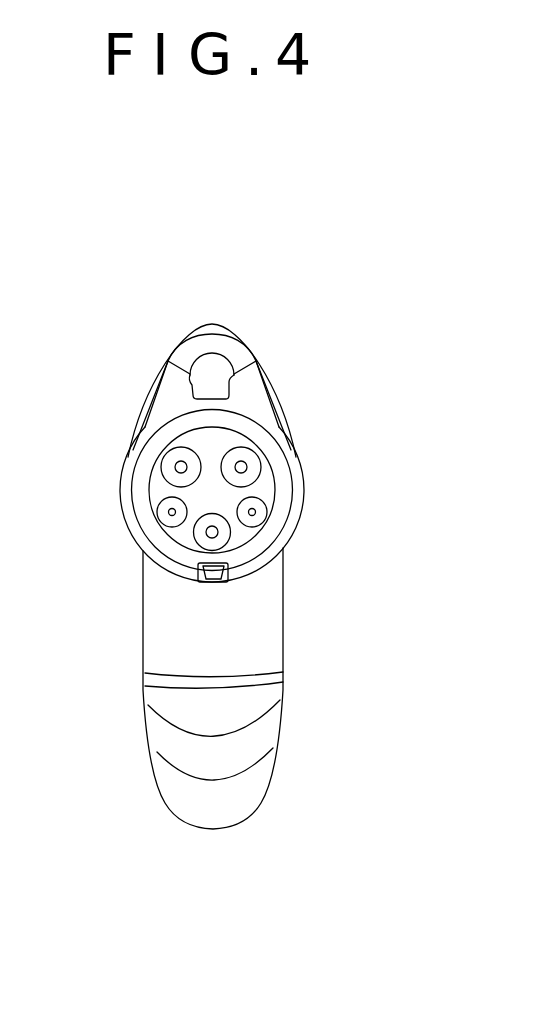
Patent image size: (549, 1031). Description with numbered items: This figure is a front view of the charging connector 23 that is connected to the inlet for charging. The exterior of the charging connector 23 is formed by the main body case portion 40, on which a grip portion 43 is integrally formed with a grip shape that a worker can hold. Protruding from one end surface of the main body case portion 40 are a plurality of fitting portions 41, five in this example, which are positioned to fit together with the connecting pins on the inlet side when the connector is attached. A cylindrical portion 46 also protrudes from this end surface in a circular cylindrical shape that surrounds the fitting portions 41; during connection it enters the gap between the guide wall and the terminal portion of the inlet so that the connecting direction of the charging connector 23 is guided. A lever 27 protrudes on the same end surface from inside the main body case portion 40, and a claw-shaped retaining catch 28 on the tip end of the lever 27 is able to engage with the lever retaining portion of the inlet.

The charging connector 23 is at (101, 353).
The lever 27 is at (208, 370).
The retaining catch 28 is at (217, 393).
The main body case portion 40 is at (143, 590).
The fitting portions 41 is at (181, 467).
The grip portion 43 is at (262, 622).
The cylindrical portion 46 is at (281, 493).